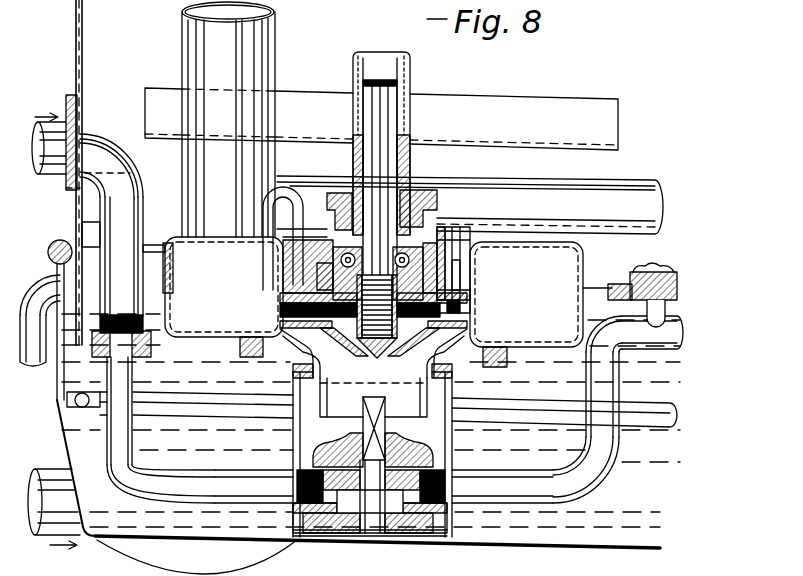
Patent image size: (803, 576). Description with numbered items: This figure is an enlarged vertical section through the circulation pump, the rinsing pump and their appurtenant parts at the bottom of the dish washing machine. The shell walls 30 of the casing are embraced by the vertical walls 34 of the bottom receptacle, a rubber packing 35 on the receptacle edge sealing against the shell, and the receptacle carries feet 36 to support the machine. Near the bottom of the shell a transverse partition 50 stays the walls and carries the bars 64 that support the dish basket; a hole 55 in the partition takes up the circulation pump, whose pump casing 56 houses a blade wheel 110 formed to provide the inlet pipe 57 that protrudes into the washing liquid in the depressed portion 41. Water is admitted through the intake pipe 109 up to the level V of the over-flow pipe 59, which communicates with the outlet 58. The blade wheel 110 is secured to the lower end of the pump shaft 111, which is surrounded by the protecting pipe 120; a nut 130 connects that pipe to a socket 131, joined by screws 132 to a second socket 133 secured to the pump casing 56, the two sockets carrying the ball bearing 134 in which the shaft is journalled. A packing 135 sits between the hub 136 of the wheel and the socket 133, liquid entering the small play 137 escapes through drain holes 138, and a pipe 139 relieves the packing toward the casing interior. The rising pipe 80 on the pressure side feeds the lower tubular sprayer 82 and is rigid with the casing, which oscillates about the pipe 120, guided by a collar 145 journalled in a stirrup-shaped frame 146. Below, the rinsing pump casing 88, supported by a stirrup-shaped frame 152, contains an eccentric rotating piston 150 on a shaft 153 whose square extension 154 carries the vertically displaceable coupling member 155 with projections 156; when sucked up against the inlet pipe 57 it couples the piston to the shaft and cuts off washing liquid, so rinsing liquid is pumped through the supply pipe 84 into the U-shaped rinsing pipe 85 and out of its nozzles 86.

The shell walls 30 is at (84, 17).
The vertical walls of receptacle 34 is at (58, 407).
The packing 35 is at (60, 240).
The feet 36 is at (118, 549).
The depressed portion 41 is at (543, 548).
The transverse partition 50 is at (150, 244).
The hole 55 is at (593, 287).
The pump casing 56 is at (540, 345).
The inlet pipe 57 is at (320, 383).
The outlet 58 is at (47, 468).
The over-flow pipe 59 is at (55, 373).
The bars 64 is at (521, 98).
The rising pipe 80 is at (180, 42).
The tubular sprayer 82 is at (530, 181).
The supply pipe 84 is at (70, 199).
The rinsing pipe 85 is at (620, 460).
The nozzles 86 is at (661, 275).
The pump casing 88 is at (410, 536).
The intake pipe 109 is at (125, 132).
The blade wheel 110 is at (380, 350).
The pump shaft 111 is at (412, 86).
The protecting pipe 120 is at (354, 80).
The nut 130 is at (417, 190).
The socket 131 is at (442, 190).
The screws 132 is at (466, 226).
The socket 133 is at (471, 278).
The ball bearing 134 is at (471, 263).
The packing 135 is at (281, 300).
The hub 136 is at (417, 332).
The play 137 is at (280, 319).
The drain holes 138 is at (336, 332).
The pipe 139 is at (284, 189).
The collar 145 is at (454, 376).
The stirrup-shaped frame 146 is at (294, 371).
The rotating piston 150 is at (348, 520).
The stirrup-shaped frame 152 is at (449, 516).
The shaft 153 is at (447, 450).
The extension 154 is at (382, 414).
The coupling member 155 is at (400, 445).
The projections 156 is at (296, 450).
The level V is at (50, 275).